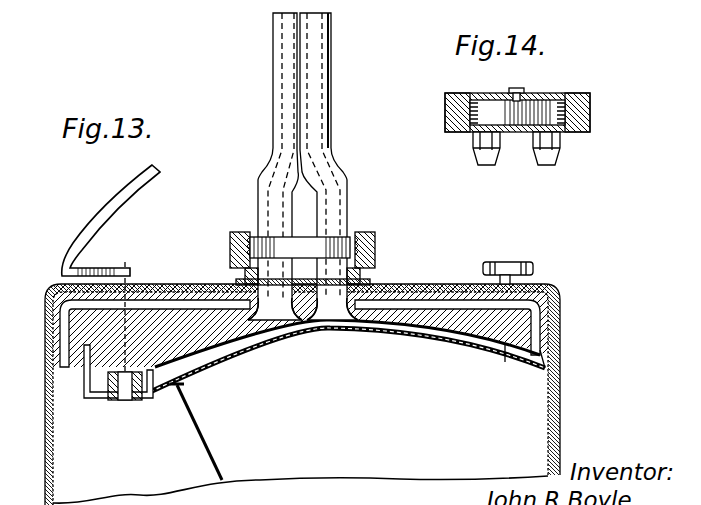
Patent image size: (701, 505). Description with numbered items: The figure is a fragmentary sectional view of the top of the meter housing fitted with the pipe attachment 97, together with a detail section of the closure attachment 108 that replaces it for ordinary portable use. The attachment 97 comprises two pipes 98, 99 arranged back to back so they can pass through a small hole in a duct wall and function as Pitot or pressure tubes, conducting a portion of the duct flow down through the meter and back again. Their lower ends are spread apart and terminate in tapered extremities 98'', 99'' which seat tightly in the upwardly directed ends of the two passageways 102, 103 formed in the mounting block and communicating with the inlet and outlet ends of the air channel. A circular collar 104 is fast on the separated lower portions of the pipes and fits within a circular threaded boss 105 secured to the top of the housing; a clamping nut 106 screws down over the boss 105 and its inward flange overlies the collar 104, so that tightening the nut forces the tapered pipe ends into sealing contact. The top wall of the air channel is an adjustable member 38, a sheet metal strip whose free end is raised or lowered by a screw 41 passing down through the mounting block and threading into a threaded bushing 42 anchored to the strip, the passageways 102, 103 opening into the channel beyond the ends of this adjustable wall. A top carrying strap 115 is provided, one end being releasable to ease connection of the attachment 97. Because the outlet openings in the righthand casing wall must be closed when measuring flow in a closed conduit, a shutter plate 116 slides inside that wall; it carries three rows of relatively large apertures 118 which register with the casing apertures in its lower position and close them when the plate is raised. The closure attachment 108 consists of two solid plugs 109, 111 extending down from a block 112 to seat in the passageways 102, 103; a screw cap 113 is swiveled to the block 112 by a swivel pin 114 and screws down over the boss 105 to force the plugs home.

In FIG. 13, the adjustable member 38 is at (217, 350).
In FIG. 13, the screw 41 is at (160, 265).
In FIG. 13, the threaded bushing 42 is at (113, 386).
In FIG. 13, the attachment 97 is at (273, 105).
In FIG. 13, the pipe 98 is at (258, 155).
In FIG. 13, the pipe 99 is at (338, 155).
In FIG. 13, the tapered extremity 98'' is at (275, 342).
In FIG. 13, the tapered extremity 99'' is at (335, 337).
In FIG. 13, the passageway 102 is at (210, 300).
In FIG. 13, the passageway 103 is at (420, 312).
In FIG. 13, the circular collar 104 is at (340, 235).
In FIG. 13, the threaded boss 105 is at (373, 283).
In FIG. 13, the clamping nut 106 is at (375, 246).
In FIG. 14, the closure attachment 108 is at (600, 130).
In FIG. 14, the solid plug 109 is at (487, 170).
In FIG. 14, the solid plug 111 is at (545, 168).
In FIG. 14, the block 112 is at (542, 97).
In FIG. 14, the screw cap 113 is at (590, 105).
In FIG. 14, the swivel pin 114 is at (512, 88).
In FIG. 13, the top carrying strap 115 is at (112, 211).
In FIG. 13, the shutter plate 116 is at (548, 440).
In FIG. 13, the apertures 118 is at (548, 370).